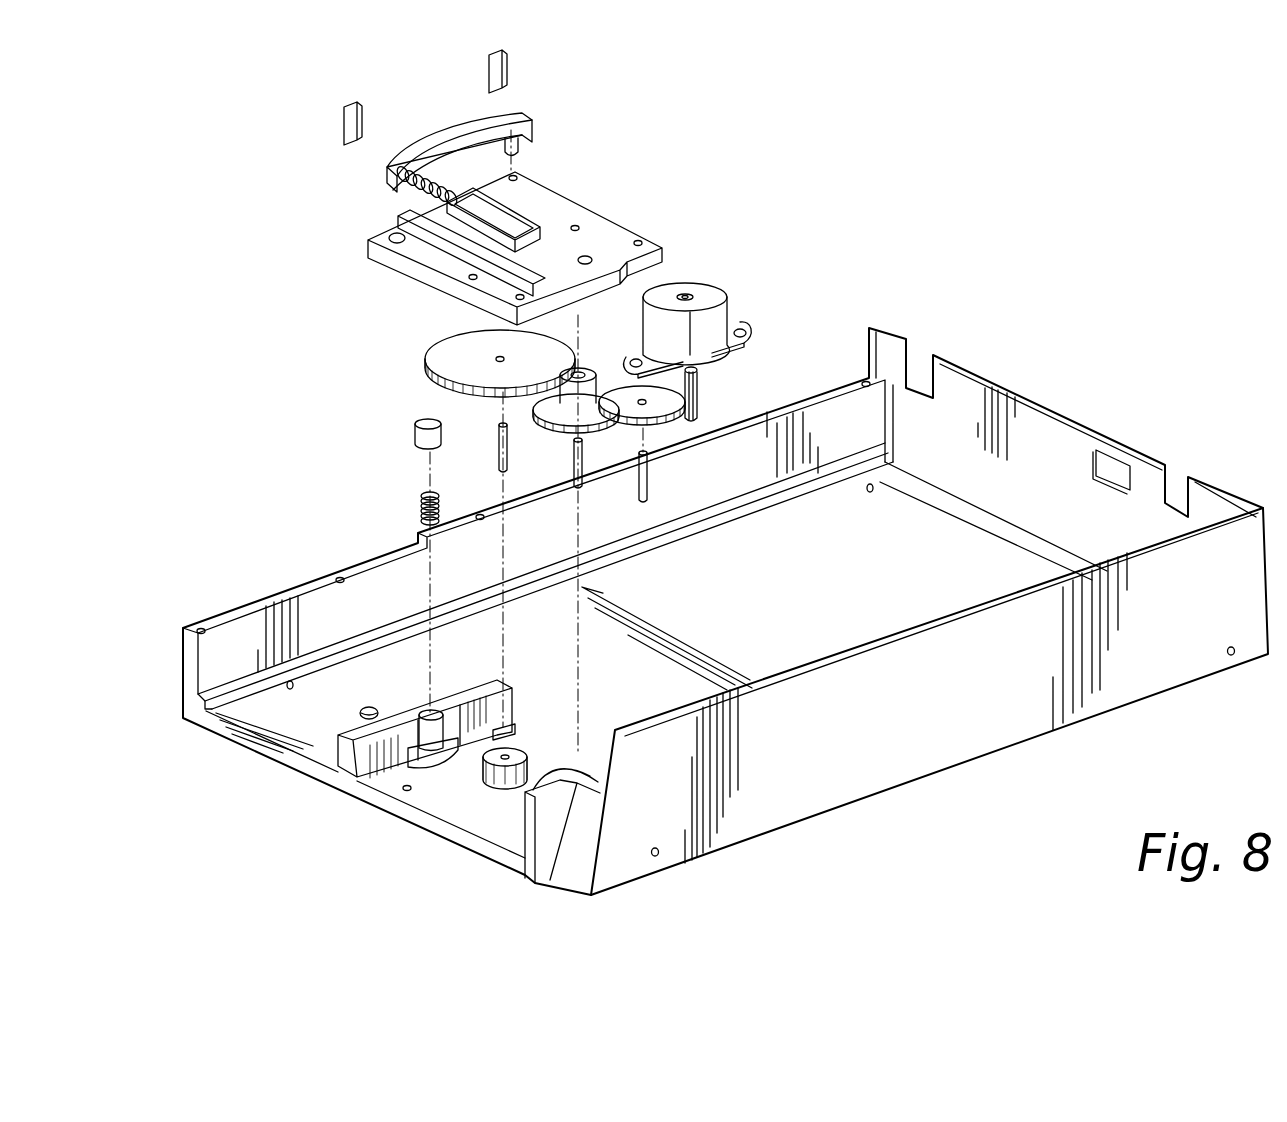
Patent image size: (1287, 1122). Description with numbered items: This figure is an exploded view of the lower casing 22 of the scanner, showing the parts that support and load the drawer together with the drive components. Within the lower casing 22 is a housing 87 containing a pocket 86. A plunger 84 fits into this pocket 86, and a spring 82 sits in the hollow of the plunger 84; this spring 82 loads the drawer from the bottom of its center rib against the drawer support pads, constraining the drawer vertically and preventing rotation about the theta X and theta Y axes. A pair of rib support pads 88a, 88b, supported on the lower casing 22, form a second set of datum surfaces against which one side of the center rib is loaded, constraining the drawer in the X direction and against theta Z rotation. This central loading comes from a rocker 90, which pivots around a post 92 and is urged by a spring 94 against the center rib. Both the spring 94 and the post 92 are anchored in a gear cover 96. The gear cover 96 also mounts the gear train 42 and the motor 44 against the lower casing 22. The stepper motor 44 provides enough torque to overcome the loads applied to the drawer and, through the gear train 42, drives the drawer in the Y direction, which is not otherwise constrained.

The lower casing 22 is at (873, 778).
The gear train 42 is at (425, 355).
The stepper motor 44 is at (735, 300).
The spring 82 is at (418, 510).
The plunger 84 is at (412, 440).
The pocket 86 is at (410, 735).
The housing 87 is at (345, 760).
The rib support pad 88a is at (352, 100).
The rib support pad 88b is at (507, 62).
The rocker 90 is at (516, 118).
The post 92 is at (520, 148).
The spring 94 is at (413, 195).
The gear cover 96 is at (600, 217).